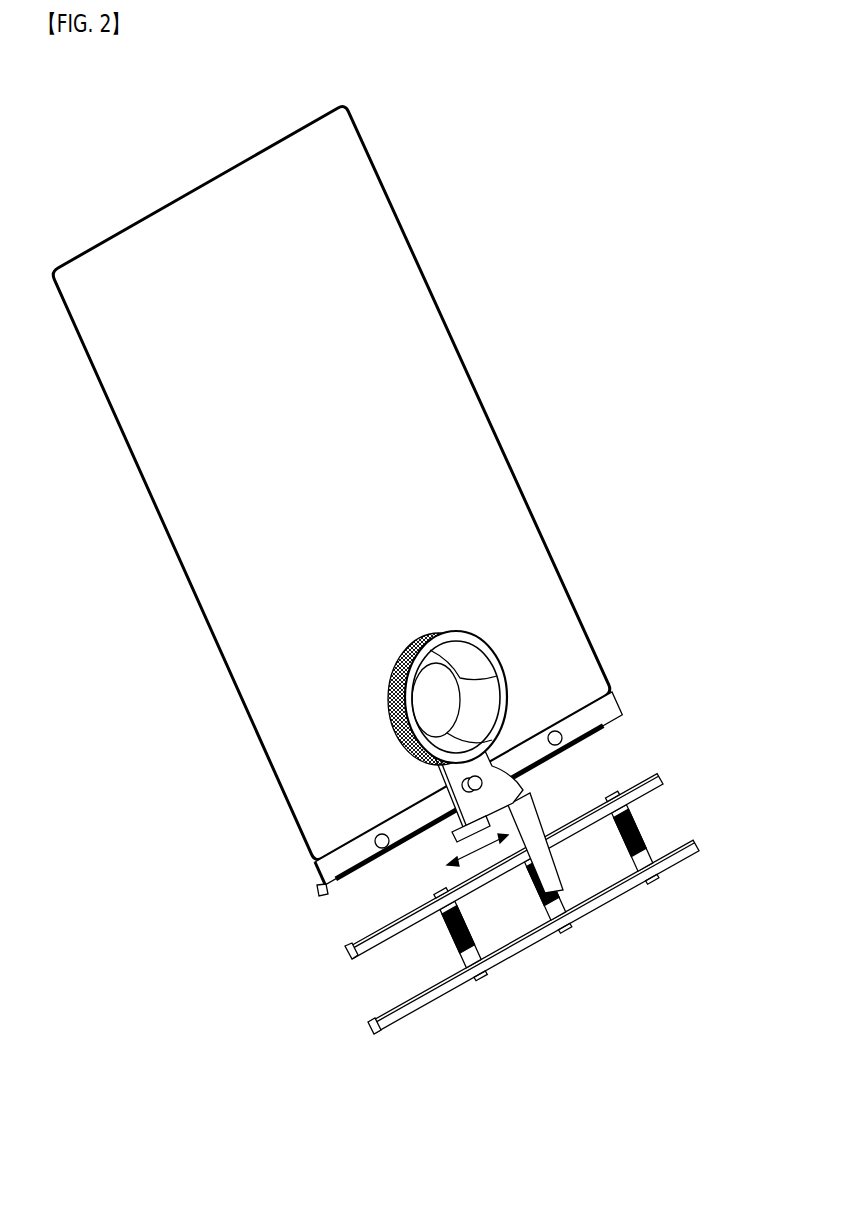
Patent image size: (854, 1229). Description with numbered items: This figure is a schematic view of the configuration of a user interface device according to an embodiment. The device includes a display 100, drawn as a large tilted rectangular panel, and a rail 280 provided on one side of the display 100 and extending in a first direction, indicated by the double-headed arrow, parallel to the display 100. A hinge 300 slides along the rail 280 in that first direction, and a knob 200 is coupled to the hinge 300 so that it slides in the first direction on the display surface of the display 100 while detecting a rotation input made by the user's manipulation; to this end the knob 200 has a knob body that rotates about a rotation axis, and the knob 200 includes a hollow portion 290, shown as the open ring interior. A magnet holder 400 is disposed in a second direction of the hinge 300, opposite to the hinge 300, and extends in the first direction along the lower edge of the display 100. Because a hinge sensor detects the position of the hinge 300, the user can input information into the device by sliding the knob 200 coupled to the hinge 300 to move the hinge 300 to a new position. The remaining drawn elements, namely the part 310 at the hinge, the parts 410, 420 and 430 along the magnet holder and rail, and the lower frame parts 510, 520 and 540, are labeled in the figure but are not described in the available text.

The display 100 is at (415, 284).
The knob 200 is at (443, 656).
The hollow portion 290 is at (460, 679).
The hinge 300 is at (428, 775).
The pivot pin 310 is at (483, 784).
The magnet holder 400 is at (626, 706).
The guide hole 410 is at (383, 848).
The slider 420 is at (445, 832).
The fastening hole 430 is at (562, 740).
The rail 280 is at (318, 891).
The support post 510 is at (474, 935).
The connecting slab 520 is at (560, 894).
The base plate 540 is at (522, 911).